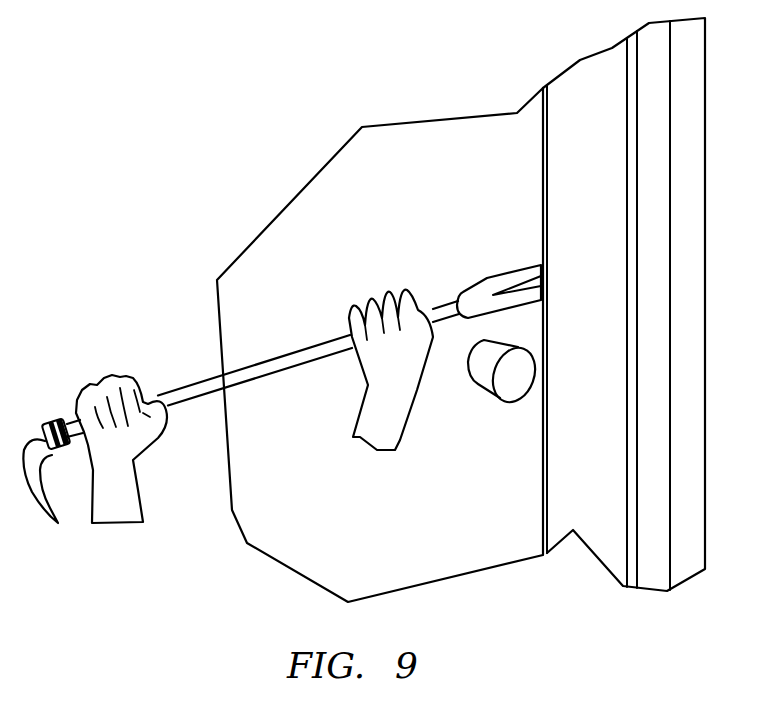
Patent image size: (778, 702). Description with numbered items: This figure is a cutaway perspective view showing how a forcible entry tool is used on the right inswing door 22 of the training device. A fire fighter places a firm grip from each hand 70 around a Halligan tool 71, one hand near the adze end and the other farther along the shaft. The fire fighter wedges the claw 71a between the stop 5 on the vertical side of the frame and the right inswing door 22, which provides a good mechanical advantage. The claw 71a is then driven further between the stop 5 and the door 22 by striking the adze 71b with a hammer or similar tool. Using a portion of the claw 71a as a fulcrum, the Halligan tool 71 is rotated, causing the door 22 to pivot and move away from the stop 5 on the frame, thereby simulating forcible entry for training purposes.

The stop 5 is at (592, 515).
The right hand inswing door 22 is at (352, 238).
The hand 70 is at (140, 400).
The Halligan tool 71 is at (268, 371).
The claw 71a is at (483, 280).
The adze 71b is at (43, 495).